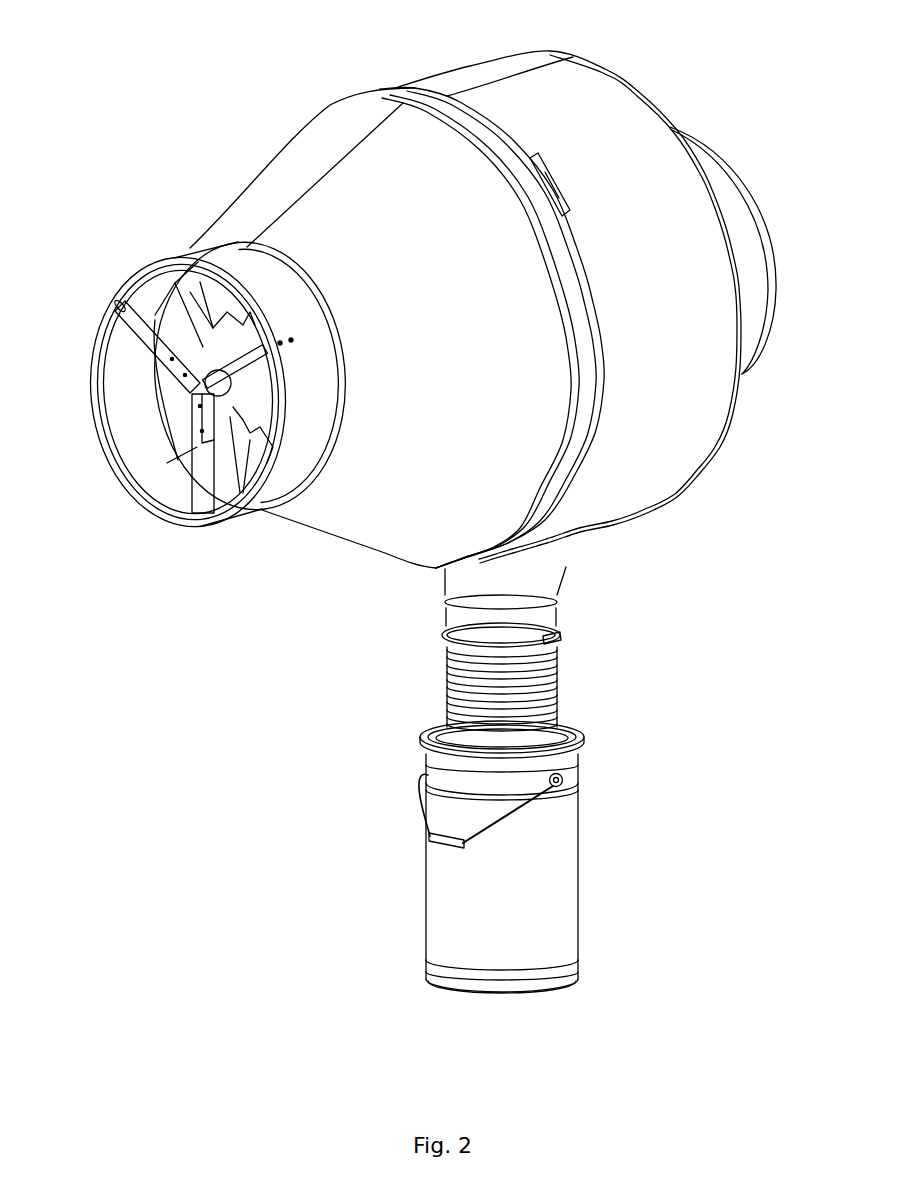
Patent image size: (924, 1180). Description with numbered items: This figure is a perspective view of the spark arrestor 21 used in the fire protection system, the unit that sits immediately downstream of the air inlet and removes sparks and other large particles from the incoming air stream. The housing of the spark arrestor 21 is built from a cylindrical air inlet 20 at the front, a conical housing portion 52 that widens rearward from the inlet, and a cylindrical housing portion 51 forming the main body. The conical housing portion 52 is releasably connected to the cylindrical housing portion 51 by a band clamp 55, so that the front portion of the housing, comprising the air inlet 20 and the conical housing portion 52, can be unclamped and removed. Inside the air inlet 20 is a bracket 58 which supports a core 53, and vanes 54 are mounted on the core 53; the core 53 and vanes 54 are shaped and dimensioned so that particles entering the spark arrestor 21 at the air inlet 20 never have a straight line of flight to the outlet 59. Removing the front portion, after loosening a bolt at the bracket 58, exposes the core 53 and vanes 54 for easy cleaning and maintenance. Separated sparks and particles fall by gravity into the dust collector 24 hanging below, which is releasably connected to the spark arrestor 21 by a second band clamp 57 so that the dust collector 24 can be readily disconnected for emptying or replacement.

The spark arrestor 21 is at (750, 72).
The air inlet 20 is at (112, 468).
The bracket 58 is at (182, 380).
The vanes 54 is at (192, 293).
The core 53 is at (258, 512).
The conical housing portion 52 is at (380, 520).
The band clamp 55 is at (507, 130).
The cylindrical housing portion 51 is at (700, 427).
The outlet 59 is at (766, 227).
The band clamp 57 is at (585, 736).
The dust collector 24 is at (555, 888).